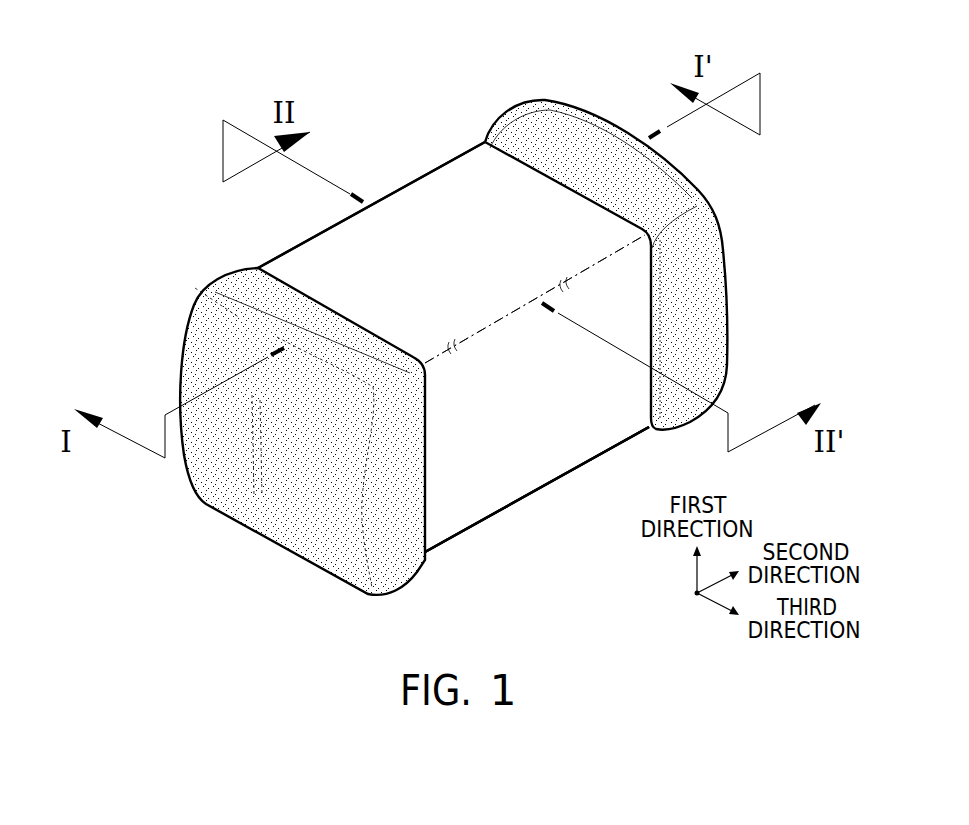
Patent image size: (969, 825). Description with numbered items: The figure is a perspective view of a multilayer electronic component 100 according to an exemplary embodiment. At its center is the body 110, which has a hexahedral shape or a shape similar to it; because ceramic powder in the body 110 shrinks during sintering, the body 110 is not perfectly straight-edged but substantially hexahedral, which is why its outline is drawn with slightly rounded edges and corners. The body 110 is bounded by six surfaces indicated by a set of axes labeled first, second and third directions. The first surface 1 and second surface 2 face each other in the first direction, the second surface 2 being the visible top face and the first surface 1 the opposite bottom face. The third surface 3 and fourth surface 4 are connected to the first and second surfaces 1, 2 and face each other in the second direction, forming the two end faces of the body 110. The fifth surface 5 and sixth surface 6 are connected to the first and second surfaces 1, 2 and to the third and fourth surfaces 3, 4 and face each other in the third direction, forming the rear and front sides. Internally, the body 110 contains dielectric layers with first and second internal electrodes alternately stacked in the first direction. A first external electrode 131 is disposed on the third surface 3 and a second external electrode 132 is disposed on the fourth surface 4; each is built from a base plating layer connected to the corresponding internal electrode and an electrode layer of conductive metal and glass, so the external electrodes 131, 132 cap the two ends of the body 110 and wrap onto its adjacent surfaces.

The multilayer electronic component 100 is at (341, 61).
The body 110 is at (322, 253).
The first external electrode 131 is at (246, 268).
The second external electrode 132 is at (513, 117).
The first surface 1 is at (514, 490).
The second surface 2 is at (466, 203).
The third surface 3 is at (285, 490).
The fourth surface 4 is at (690, 278).
The fifth surface 5 is at (400, 206).
The sixth surface 6 is at (534, 433).